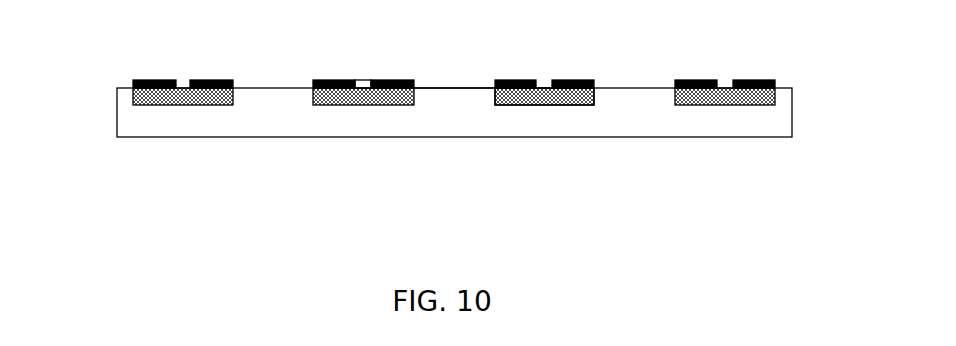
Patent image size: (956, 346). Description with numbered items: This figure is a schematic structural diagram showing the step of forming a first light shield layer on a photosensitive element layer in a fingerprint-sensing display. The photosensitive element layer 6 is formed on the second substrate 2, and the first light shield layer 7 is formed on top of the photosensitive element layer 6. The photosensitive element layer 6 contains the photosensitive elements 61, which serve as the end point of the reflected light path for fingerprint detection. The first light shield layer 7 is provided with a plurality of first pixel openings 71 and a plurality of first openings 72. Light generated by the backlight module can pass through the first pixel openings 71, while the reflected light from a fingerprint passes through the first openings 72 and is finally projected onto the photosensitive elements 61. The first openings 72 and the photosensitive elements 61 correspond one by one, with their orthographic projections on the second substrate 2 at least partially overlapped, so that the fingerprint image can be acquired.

The second substrate 2 is at (117, 116).
The photosensitive element layer 6 is at (776, 96).
The photosensitive element 61 is at (555, 95).
The first light shield layer 7 is at (133, 81).
The first pixel opening 71 is at (450, 84).
The first opening 72 is at (362, 84).